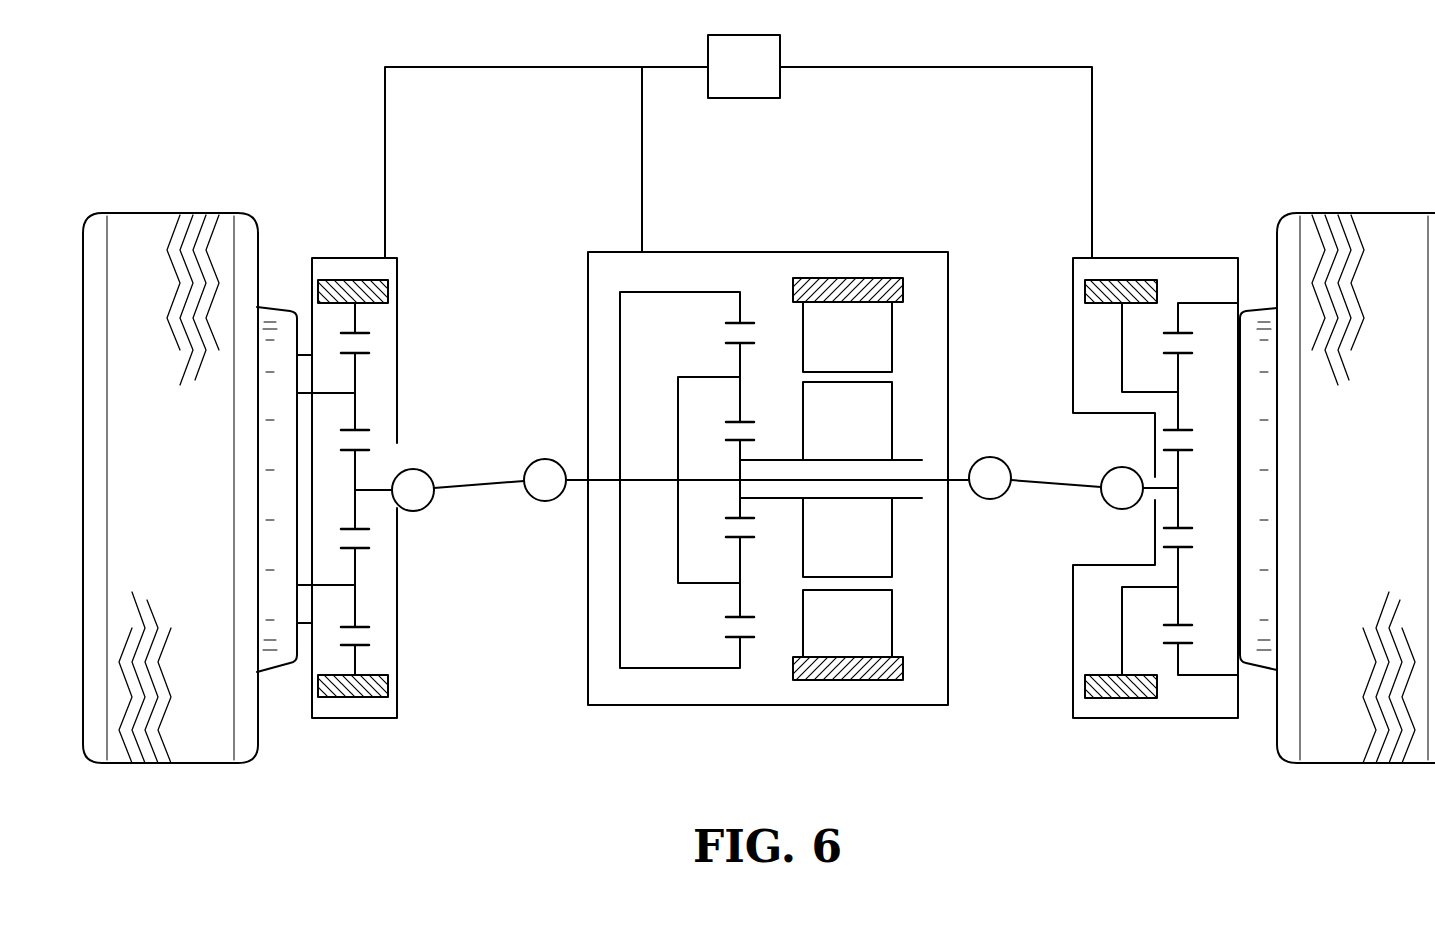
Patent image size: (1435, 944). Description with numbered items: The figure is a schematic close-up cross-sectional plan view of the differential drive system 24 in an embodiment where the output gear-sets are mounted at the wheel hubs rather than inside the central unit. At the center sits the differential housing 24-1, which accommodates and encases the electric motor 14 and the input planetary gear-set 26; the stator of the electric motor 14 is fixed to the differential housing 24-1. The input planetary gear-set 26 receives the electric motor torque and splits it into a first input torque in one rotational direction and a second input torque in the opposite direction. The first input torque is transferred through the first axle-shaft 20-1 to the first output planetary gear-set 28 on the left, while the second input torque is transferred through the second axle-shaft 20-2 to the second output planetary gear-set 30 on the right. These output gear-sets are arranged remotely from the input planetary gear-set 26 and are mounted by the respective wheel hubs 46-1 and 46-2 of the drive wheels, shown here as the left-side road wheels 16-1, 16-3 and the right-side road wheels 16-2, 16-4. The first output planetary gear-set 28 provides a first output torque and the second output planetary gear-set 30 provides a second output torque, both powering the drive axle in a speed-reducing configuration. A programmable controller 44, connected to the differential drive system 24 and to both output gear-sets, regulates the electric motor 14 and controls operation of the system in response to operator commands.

The electric motor 14 is at (831, 436).
The left-side front road wheel 16-1 is at (170, 535).
The left-side rear road wheel 16-3 is at (205, 748).
The right-side front road wheel 16-2 is at (1342, 535).
The right-side rear road wheel 16-4 is at (1337, 745).
The first axle-shaft 20-1 is at (470, 490).
The second axle-shaft 20-2 is at (1053, 492).
The differential drive system 24 is at (826, 184).
The differential housing 24-1 is at (825, 278).
The input planetary gear-set 26 is at (695, 291).
The first output planetary gear-set 28 is at (395, 386).
The second output planetary gear-set 30 is at (1197, 301).
The programmable controller 44 is at (732, 78).
The first wheel hub 46-1 is at (270, 323).
The second wheel hub 46-2 is at (1262, 325).